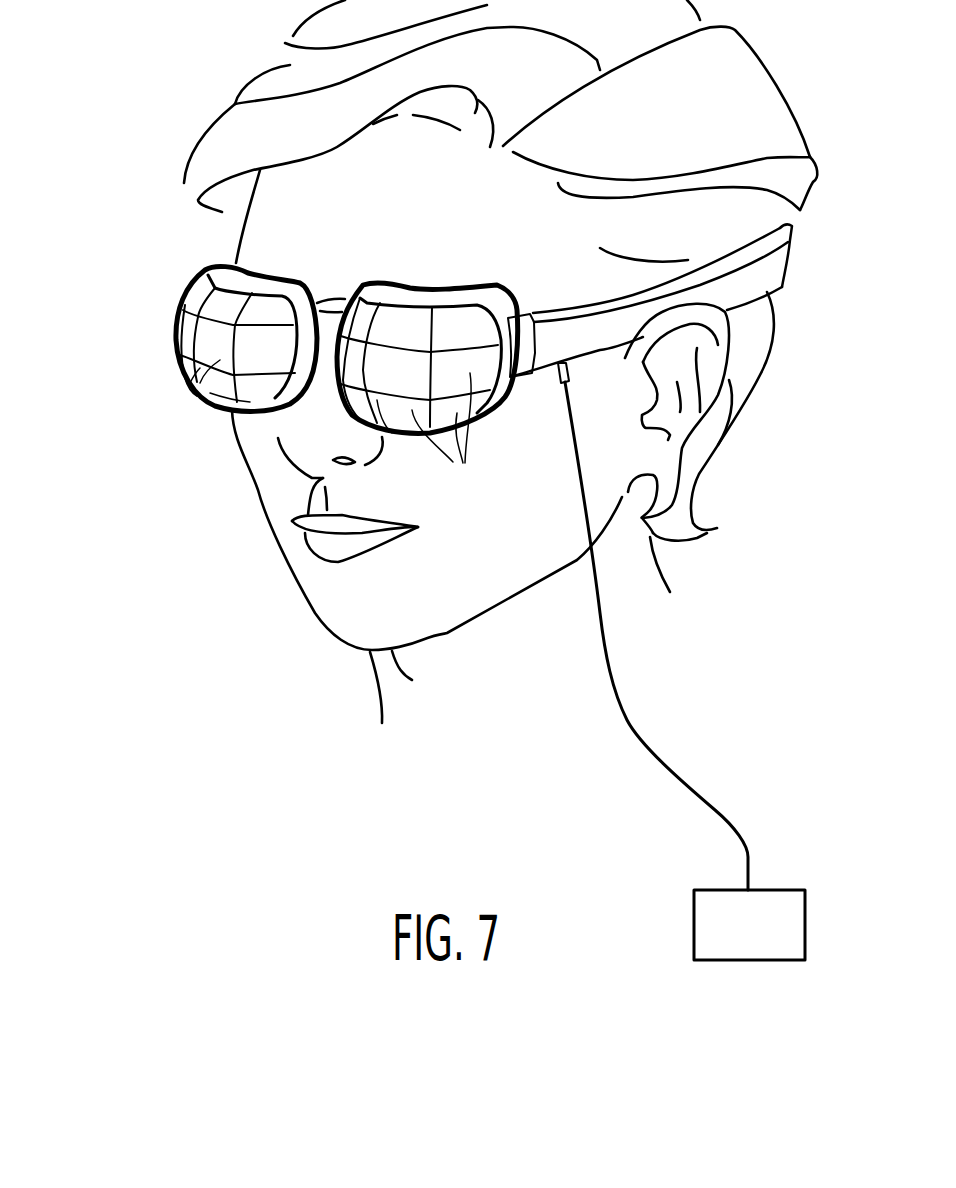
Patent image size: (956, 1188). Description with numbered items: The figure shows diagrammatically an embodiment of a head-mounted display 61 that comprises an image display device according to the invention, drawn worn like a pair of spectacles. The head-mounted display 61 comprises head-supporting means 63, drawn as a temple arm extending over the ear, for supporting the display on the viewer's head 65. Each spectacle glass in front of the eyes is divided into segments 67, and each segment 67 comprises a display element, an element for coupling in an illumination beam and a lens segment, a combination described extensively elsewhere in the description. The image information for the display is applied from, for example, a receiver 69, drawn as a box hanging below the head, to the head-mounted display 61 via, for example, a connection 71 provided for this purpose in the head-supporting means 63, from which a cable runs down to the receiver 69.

The head-mounted display 61 is at (454, 358).
The head-supporting means 63 is at (753, 277).
The viewer's head 65 is at (513, 650).
The segments 67 is at (222, 403).
The receiver 69 is at (752, 948).
The connection 71 is at (572, 372).